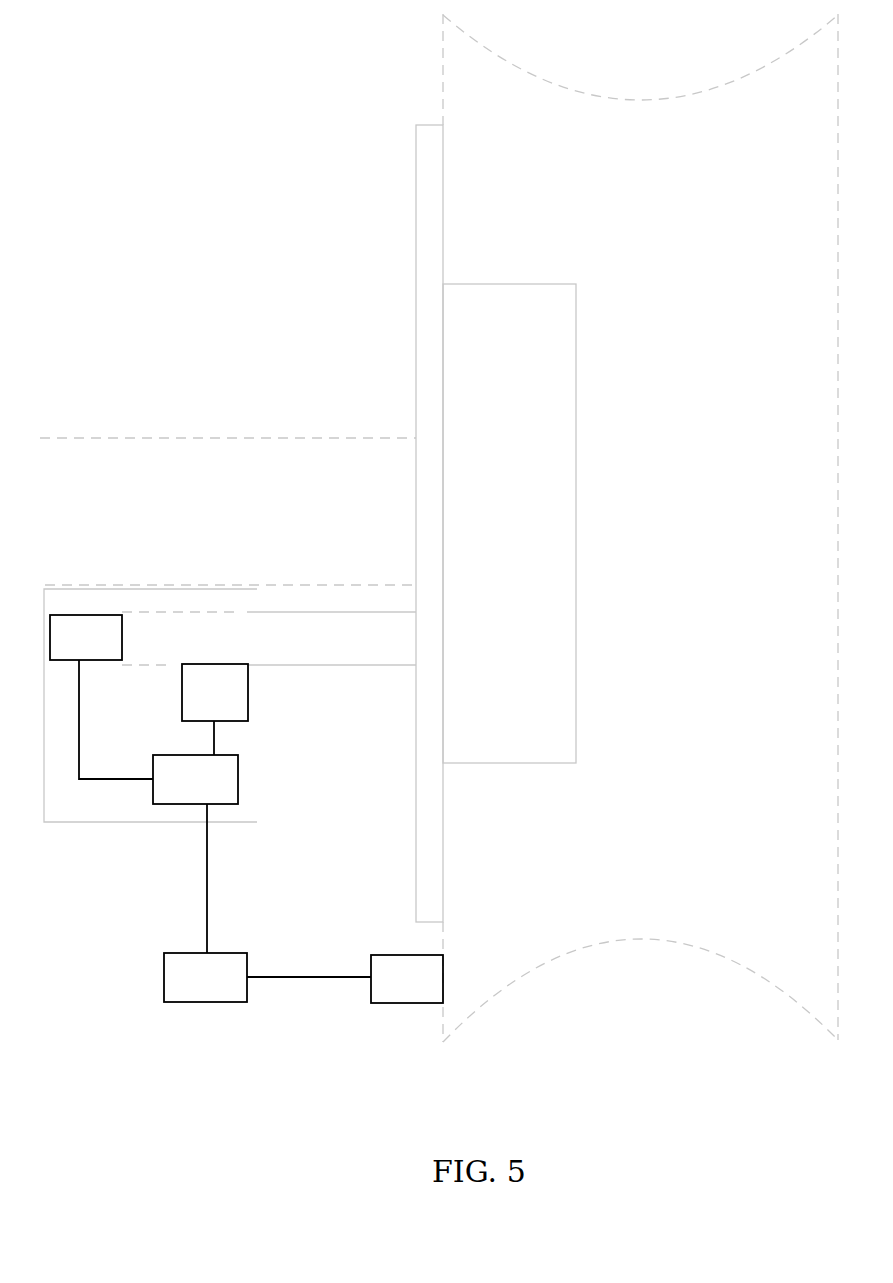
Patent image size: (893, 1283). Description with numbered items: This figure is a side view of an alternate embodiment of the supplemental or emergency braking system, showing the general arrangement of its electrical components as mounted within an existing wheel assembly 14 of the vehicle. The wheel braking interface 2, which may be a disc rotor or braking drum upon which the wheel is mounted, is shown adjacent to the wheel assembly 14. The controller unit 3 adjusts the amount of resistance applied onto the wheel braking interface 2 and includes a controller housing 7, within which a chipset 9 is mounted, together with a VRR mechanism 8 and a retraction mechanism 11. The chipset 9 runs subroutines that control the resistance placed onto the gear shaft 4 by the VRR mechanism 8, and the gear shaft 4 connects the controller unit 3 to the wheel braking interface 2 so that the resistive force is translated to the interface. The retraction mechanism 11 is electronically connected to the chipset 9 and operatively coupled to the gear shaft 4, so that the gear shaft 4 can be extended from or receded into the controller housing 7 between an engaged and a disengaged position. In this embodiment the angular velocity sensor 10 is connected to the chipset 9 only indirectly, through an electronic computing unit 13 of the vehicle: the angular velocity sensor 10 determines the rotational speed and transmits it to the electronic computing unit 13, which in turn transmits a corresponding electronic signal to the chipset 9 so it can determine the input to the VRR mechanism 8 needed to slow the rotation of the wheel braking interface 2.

The wheel braking interface 2 is at (485, 298).
The controller unit 3 is at (84, 840).
The gear shaft 4 is at (302, 648).
The controller housing 7 is at (257, 815).
The VRR mechanism 8 is at (215, 692).
The chipset 9 is at (195, 779).
The angular velocity sensor 10 is at (407, 979).
The retraction mechanism 11 is at (86, 637).
The electronic computing unit (ECU) 13 is at (205, 977).
The wheel assembly 14 is at (668, 153).